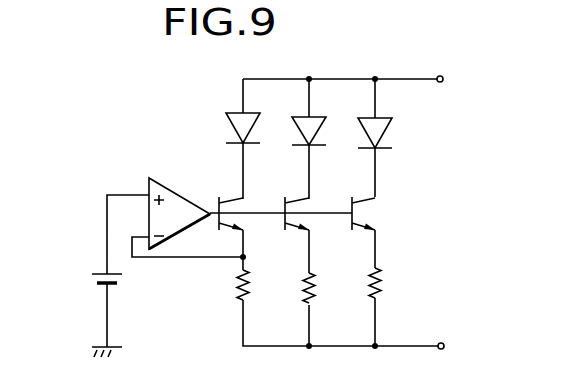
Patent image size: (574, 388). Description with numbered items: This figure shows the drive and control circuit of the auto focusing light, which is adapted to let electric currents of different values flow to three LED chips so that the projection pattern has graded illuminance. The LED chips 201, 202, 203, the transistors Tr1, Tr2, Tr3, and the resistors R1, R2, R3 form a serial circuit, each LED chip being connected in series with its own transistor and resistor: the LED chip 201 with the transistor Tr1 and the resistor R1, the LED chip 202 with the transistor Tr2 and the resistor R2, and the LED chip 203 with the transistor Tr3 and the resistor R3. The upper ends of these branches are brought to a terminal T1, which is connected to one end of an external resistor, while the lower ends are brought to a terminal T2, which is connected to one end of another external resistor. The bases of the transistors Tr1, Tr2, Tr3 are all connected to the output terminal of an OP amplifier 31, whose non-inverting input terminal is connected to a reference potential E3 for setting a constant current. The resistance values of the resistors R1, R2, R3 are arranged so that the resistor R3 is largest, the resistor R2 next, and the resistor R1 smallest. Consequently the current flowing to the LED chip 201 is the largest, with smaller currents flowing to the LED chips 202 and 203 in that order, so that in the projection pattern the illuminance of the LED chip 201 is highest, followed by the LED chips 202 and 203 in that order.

The OP amplifier 31 is at (178, 195).
The LED chip 203 is at (252, 136).
The LED chip 202 is at (318, 138).
The LED chip 201 is at (384, 132).
The transistor Tr3 is at (237, 222).
The transistor Tr2 is at (303, 222).
The transistor Tr1 is at (369, 222).
The resistor R3 is at (232, 283).
The resistor R2 is at (297, 287).
The resistor R1 is at (362, 285).
The reference potential E3 is at (122, 282).
The terminal T1 is at (458, 77).
The terminal T2 is at (459, 347).